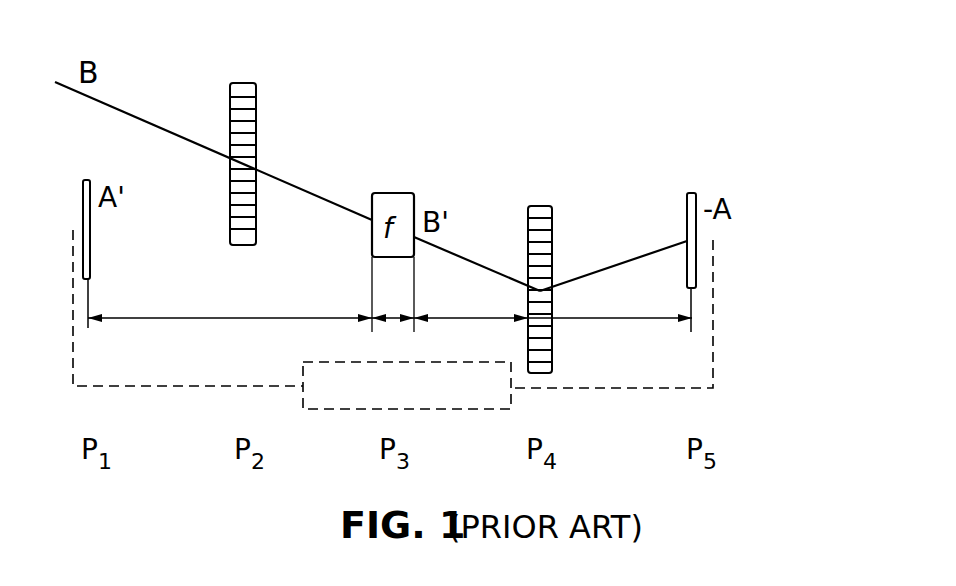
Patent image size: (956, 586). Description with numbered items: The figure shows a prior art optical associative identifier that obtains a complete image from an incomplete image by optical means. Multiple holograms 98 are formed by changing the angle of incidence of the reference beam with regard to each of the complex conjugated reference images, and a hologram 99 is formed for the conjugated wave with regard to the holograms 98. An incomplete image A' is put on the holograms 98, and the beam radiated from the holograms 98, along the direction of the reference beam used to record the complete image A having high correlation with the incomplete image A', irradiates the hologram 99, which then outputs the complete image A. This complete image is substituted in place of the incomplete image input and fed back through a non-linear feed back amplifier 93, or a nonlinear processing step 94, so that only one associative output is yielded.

The multiple holograms 98 is at (255, 124).
The hologram 99 is at (561, 249).
The nonlinear processing step 94 is at (390, 336).
The non-linear feed back amplifier 93 is at (393, 319).